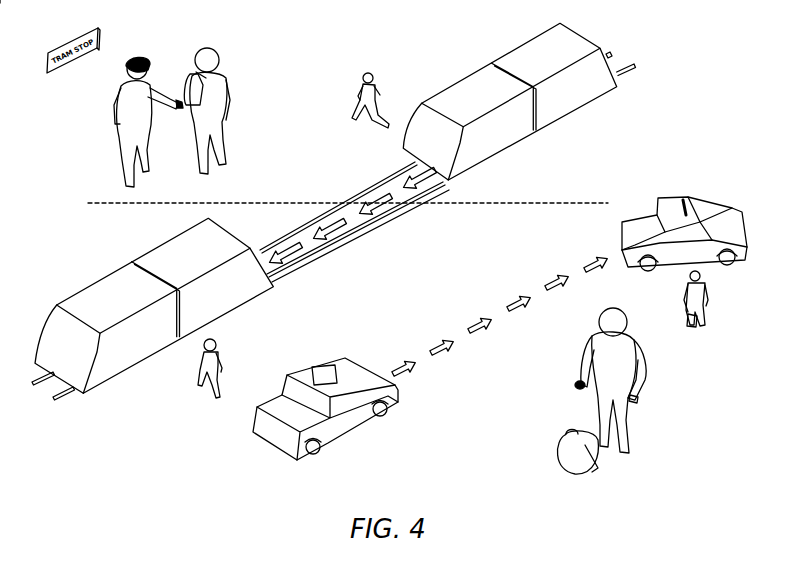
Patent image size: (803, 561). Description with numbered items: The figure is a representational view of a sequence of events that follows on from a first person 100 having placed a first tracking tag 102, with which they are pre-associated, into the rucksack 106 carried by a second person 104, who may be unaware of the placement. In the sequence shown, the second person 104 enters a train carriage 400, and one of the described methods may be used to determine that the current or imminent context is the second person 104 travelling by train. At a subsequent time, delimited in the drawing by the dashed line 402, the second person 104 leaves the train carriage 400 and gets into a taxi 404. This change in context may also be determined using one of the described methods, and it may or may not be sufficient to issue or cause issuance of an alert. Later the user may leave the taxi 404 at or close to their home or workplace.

The first person 100 is at (117, 113).
The first tracking tag 102 is at (177, 100).
The second person 104 is at (227, 97).
The rucksack 106 is at (187, 75).
The train carriage 400 is at (465, 85).
The dashed line 402 is at (572, 207).
The taxi 404 is at (350, 410).